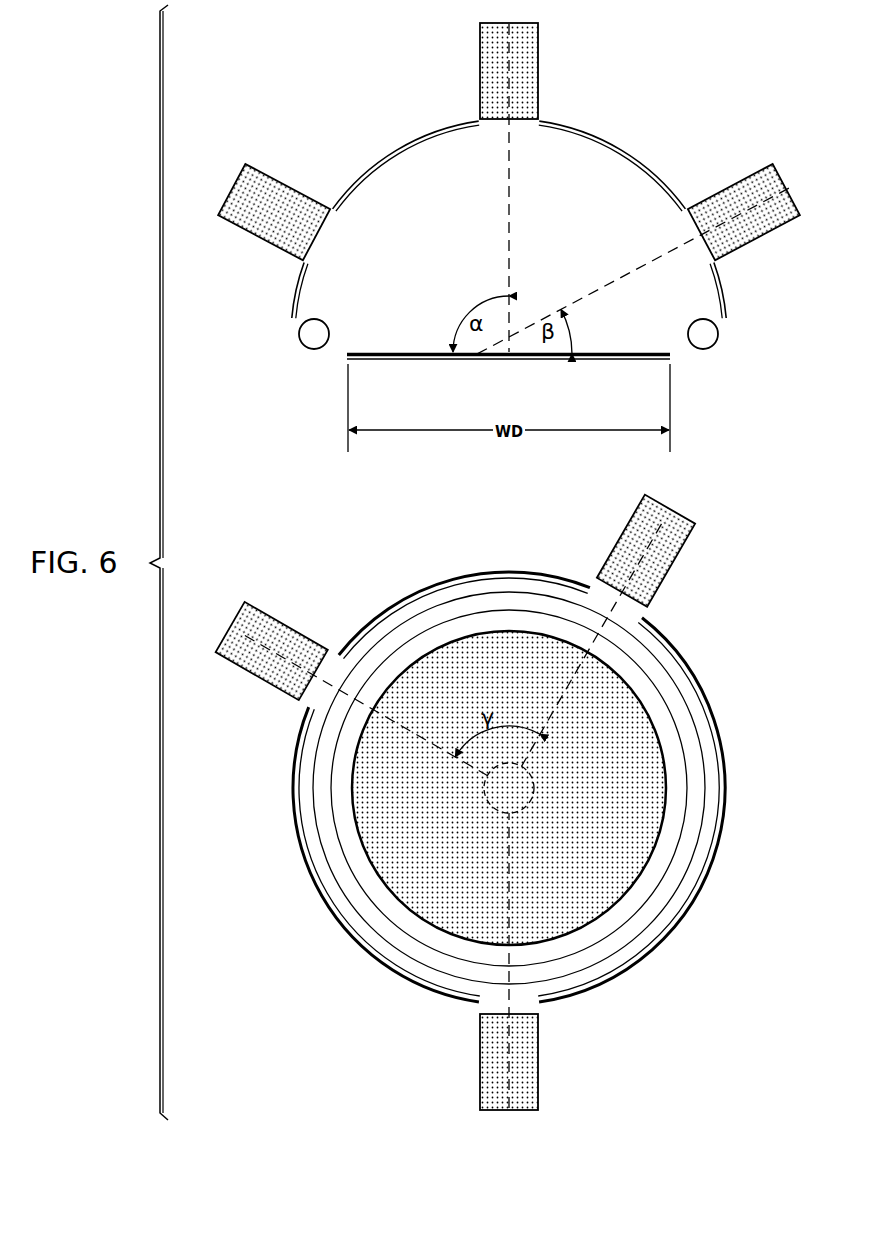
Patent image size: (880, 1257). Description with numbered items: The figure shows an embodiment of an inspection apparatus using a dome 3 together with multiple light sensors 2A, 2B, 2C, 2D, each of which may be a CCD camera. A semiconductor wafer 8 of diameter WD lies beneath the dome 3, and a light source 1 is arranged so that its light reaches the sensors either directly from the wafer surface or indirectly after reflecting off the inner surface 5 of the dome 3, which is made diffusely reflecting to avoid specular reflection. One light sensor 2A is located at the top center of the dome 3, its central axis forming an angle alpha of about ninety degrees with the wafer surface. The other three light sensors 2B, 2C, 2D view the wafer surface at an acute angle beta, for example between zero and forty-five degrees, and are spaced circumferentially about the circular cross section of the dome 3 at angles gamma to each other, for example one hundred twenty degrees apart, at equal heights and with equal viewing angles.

The light source 1 is at (303, 346).
The light sensor 2A is at (478, 47).
The light sensor 2B is at (257, 246).
The light sensor 2C is at (763, 245).
The light sensor 2D is at (477, 1065).
The dome 3 is at (641, 156).
The inner surface 5 is at (402, 156).
The semiconductor wafer 8 is at (622, 352).